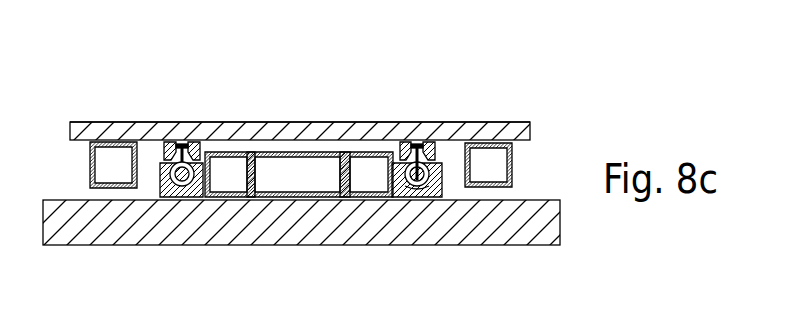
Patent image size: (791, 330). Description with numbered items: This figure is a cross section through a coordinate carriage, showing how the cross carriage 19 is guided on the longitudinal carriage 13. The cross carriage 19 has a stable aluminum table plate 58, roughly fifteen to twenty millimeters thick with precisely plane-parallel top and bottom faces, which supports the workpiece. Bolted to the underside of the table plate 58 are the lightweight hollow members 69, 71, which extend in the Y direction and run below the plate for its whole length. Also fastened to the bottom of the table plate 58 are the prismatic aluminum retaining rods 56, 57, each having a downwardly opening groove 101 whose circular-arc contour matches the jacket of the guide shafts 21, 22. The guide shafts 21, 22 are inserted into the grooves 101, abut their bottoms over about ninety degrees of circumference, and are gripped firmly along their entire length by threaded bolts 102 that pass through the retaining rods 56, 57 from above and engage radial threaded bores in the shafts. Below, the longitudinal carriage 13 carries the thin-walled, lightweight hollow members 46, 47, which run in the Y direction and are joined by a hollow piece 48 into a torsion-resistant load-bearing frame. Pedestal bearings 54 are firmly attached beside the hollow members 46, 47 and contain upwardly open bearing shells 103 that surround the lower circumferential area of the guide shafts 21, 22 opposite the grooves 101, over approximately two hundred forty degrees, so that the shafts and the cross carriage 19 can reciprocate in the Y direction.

The longitudinal carriage 13 is at (305, 198).
The cross carriage 19 is at (290, 122).
The guide shaft 21 is at (176, 192).
The guide shaft 22 is at (419, 192).
The hollow member 46 is at (251, 193).
The hollow member 47 is at (372, 197).
The hollow piece 48 is at (334, 196).
The pedestal bearing 54 is at (203, 193).
The retaining rod 56 is at (176, 162).
The retaining rod 57 is at (421, 147).
The table plate 58 is at (228, 131).
The hollow member 69 is at (89, 162).
The hollow member 71 is at (513, 163).
The groove 101 is at (432, 168).
The threaded bolt 102 is at (412, 162).
The bearing shell 103 is at (440, 188).